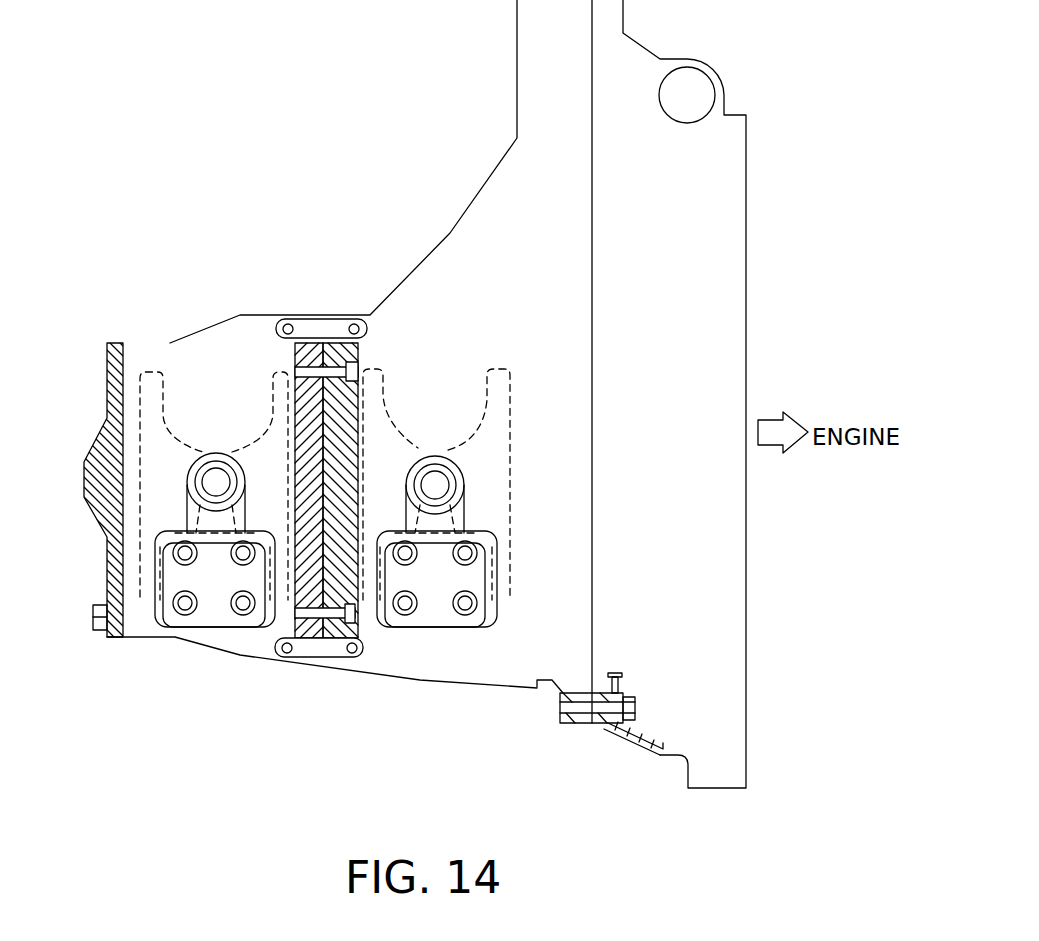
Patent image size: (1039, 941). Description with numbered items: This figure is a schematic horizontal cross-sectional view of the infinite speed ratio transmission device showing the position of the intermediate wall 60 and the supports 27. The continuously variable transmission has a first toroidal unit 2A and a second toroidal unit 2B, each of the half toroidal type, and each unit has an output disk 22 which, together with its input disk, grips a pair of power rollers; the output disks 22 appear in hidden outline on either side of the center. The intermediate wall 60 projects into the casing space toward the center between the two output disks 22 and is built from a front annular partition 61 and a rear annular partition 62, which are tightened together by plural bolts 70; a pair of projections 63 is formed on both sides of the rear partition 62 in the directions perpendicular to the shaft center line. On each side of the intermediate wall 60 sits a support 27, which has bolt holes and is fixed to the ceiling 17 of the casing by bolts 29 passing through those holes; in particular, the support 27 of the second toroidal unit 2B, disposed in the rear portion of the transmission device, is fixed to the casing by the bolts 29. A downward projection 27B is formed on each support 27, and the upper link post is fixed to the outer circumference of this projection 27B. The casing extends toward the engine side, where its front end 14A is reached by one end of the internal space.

The first toroidal unit 2A is at (421, 325).
The second toroidal unit 2B is at (181, 350).
The front end 14A is at (612, 726).
The ceiling 17 is at (160, 572).
The output disk 22 is at (256, 432).
The support 27 is at (220, 628).
The downward projection 27B is at (200, 476).
The bolts 29 is at (185, 608).
The intermediate wall 60 is at (339, 465).
The front annular partition 61 is at (357, 615).
The rear annular partition 62 is at (294, 415).
The projections 63 is at (312, 330).
The bolts 70 is at (355, 365).